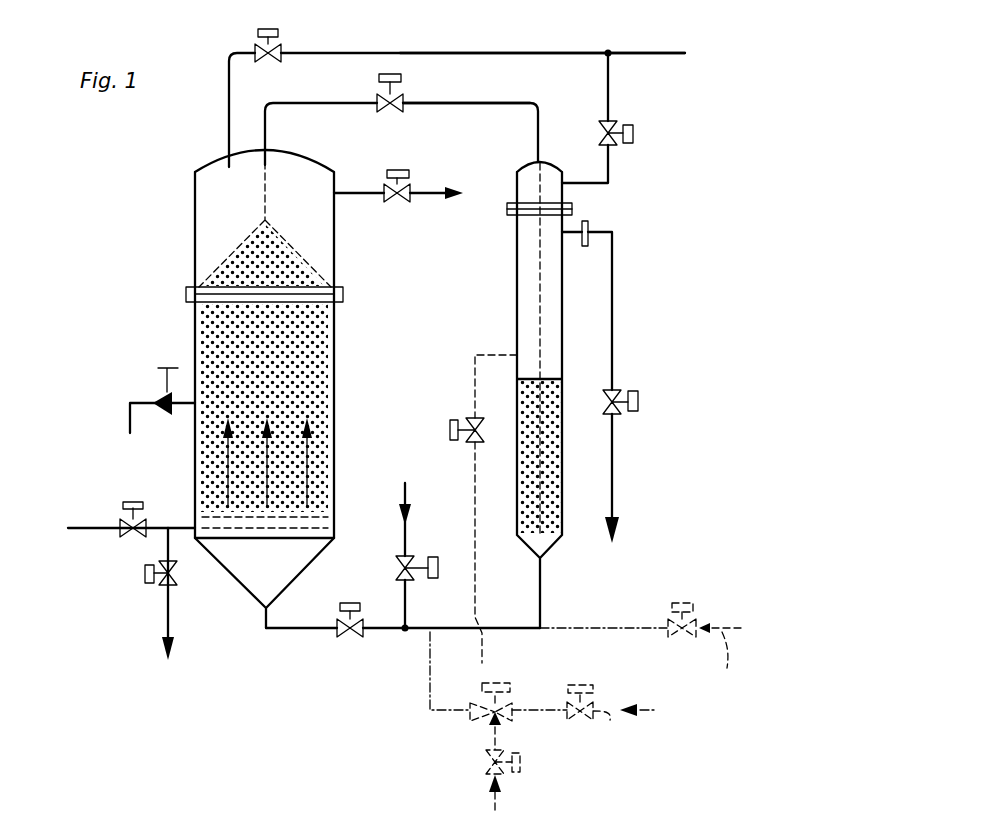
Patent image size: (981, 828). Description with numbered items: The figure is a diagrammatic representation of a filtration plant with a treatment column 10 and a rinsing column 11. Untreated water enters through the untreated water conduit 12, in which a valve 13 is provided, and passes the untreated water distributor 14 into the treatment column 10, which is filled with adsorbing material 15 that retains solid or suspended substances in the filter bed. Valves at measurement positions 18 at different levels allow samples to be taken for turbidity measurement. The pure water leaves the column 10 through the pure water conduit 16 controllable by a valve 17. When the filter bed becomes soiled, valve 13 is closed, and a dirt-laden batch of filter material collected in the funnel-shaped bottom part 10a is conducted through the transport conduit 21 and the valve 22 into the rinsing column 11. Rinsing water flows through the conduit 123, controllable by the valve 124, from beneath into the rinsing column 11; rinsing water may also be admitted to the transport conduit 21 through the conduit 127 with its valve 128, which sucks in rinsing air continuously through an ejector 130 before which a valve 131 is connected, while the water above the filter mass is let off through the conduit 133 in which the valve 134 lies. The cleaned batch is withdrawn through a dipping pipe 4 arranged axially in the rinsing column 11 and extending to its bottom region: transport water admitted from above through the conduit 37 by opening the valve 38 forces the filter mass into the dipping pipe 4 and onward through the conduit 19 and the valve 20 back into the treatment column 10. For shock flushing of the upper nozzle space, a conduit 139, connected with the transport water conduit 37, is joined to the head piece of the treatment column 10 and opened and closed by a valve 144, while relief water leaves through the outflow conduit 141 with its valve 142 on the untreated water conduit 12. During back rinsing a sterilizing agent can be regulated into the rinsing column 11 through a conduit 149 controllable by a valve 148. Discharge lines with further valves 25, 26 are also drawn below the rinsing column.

The treatment column 10 is at (190, 222).
The funnel-shaped bottom part 10a is at (254, 582).
The rinsing column 11 is at (512, 247).
The dipping pipe 4 is at (539, 295).
The untreated water conduit 12 is at (80, 524).
The valve 13 is at (152, 520).
The untreated water distributor 14 is at (320, 505).
The adsorbing material 15 is at (307, 388).
The pure water conduit 16 is at (356, 193).
The valve 17 is at (405, 190).
The measurement positions 18 is at (163, 385).
The conduit 19 is at (455, 102).
The valve 20 is at (380, 97).
The transport conduit 21 is at (386, 629).
The valve 22 is at (330, 629).
The discharge line 25 is at (615, 440).
The valve 26 is at (620, 393).
The transport water conduit 37 is at (610, 80).
The valve 38 is at (614, 128).
The conduit 123 is at (407, 490).
The valve 124 is at (410, 574).
The conduit 127 is at (608, 718).
The valve 128 is at (600, 697).
The ejector 130 is at (508, 697).
The valve 131 is at (528, 757).
The conduit 133 is at (472, 372).
The valve 134 is at (463, 434).
The conduit 139 is at (550, 53).
The outflow conduit 141 is at (165, 612).
The valve 142 is at (145, 575).
The valve 144 is at (258, 50).
The valve 148 is at (683, 600).
The conduit 149 is at (664, 635).